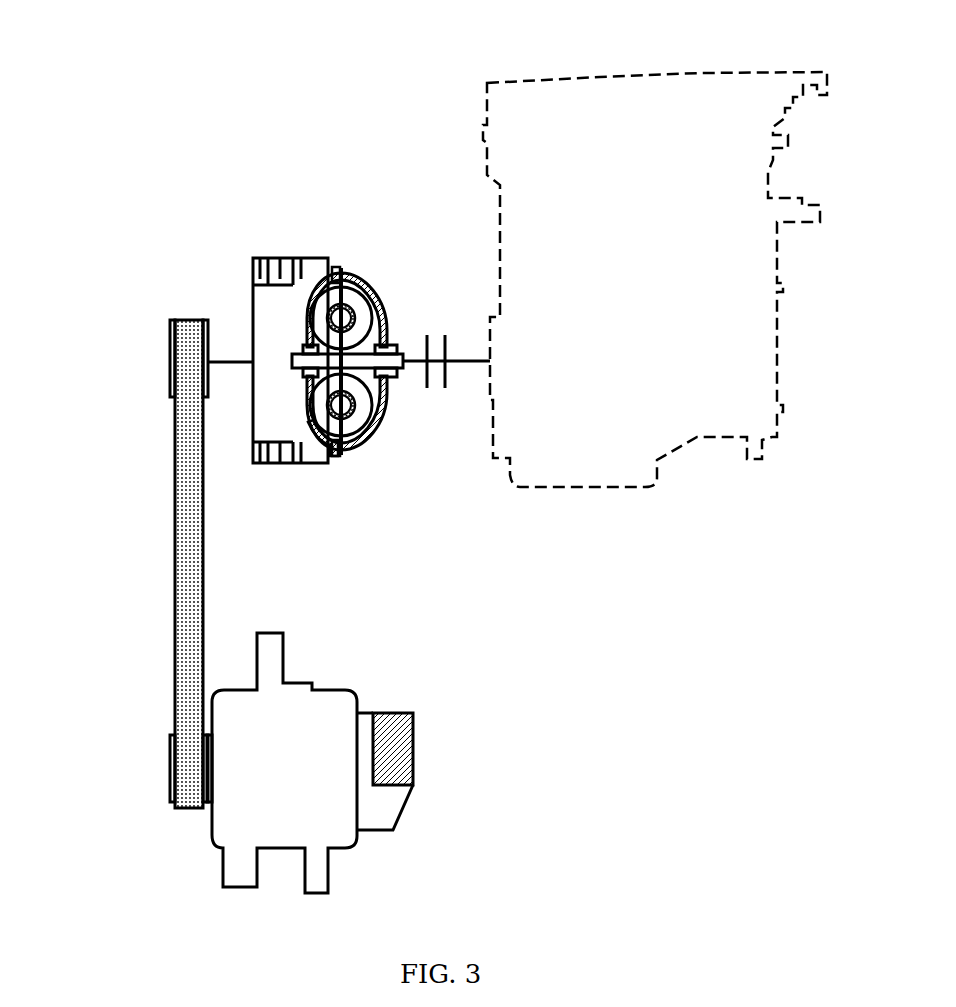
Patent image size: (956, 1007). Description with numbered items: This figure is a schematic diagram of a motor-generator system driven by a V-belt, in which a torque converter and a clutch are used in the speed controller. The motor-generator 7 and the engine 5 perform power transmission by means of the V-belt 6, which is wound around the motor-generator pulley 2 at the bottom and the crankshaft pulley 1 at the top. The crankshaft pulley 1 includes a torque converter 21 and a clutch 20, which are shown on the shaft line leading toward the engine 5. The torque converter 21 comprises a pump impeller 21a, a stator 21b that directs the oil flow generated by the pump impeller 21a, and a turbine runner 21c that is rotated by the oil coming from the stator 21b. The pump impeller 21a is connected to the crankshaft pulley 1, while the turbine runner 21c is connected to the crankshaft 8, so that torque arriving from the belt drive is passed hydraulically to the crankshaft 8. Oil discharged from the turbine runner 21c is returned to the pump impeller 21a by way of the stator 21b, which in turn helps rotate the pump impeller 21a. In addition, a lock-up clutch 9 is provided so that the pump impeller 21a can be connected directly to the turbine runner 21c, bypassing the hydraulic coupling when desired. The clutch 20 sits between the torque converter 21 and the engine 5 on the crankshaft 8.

The crankshaft pulley 1 is at (170, 357).
The motor-generator pulley 2 is at (171, 763).
The engine 5 is at (717, 437).
The V-belt 6 is at (175, 568).
The motor-generator 7 is at (357, 838).
The crankshaft 8 is at (467, 360).
The lock-up clutch 9 is at (256, 276).
The clutch 20 is at (425, 382).
The torque converter 21 is at (281, 318).
The pump impeller 21a is at (323, 437).
The stator 21b is at (383, 275).
The turbine runner 21c is at (385, 443).